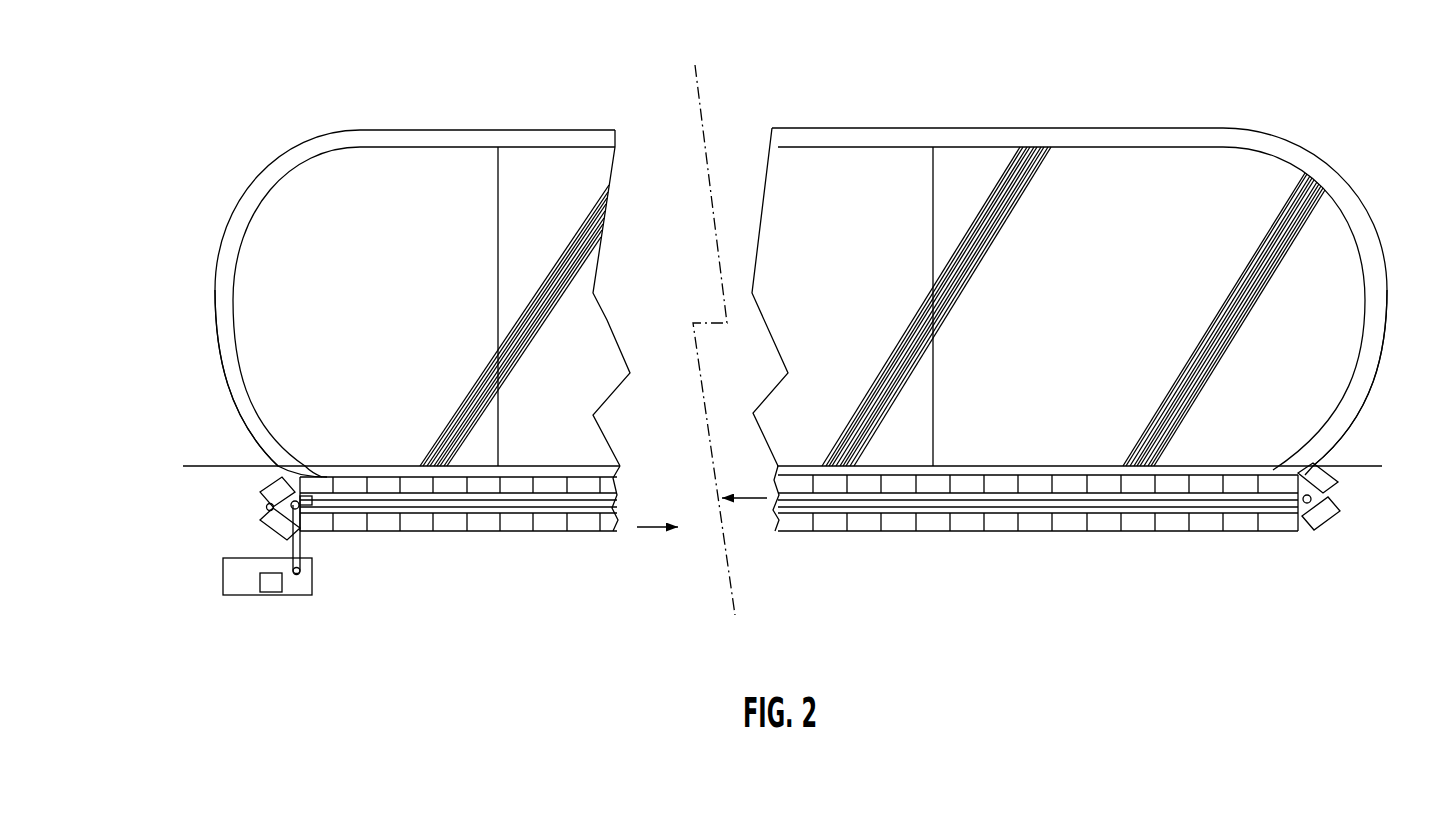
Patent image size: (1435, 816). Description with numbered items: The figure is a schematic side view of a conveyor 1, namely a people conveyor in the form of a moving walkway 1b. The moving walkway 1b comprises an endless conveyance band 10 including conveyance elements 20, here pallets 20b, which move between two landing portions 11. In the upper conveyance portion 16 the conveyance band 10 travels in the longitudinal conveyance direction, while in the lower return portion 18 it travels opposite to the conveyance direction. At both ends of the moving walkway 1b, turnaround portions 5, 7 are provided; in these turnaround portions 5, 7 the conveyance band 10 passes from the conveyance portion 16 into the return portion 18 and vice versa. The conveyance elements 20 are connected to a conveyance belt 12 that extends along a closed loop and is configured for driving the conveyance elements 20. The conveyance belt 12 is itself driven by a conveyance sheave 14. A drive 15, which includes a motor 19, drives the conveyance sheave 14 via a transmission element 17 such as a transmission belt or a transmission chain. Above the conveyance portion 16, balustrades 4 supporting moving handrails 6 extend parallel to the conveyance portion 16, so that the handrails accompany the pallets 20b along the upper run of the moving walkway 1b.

The conveyor 1 is at (401, 320).
The moving walkway 1b is at (252, 147).
The balustrade 4 is at (523, 170).
The turnaround portion 5 is at (215, 506).
The moving handrail 6 is at (1250, 130).
The turnaround portion 7 is at (1363, 491).
The conveyance band 10 is at (1035, 562).
The landing portion 11 is at (225, 442).
The conveyance belt 12 is at (612, 507).
The conveyance sheave 14 is at (266, 506).
The drive 15 is at (235, 603).
The conveyance portion 16 is at (1101, 462).
The transmission element 17 is at (323, 538).
The return portion 18 is at (1080, 597).
The motor 19 is at (270, 583).
The conveyance element 20 is at (458, 535).
The pallet 20b is at (422, 525).